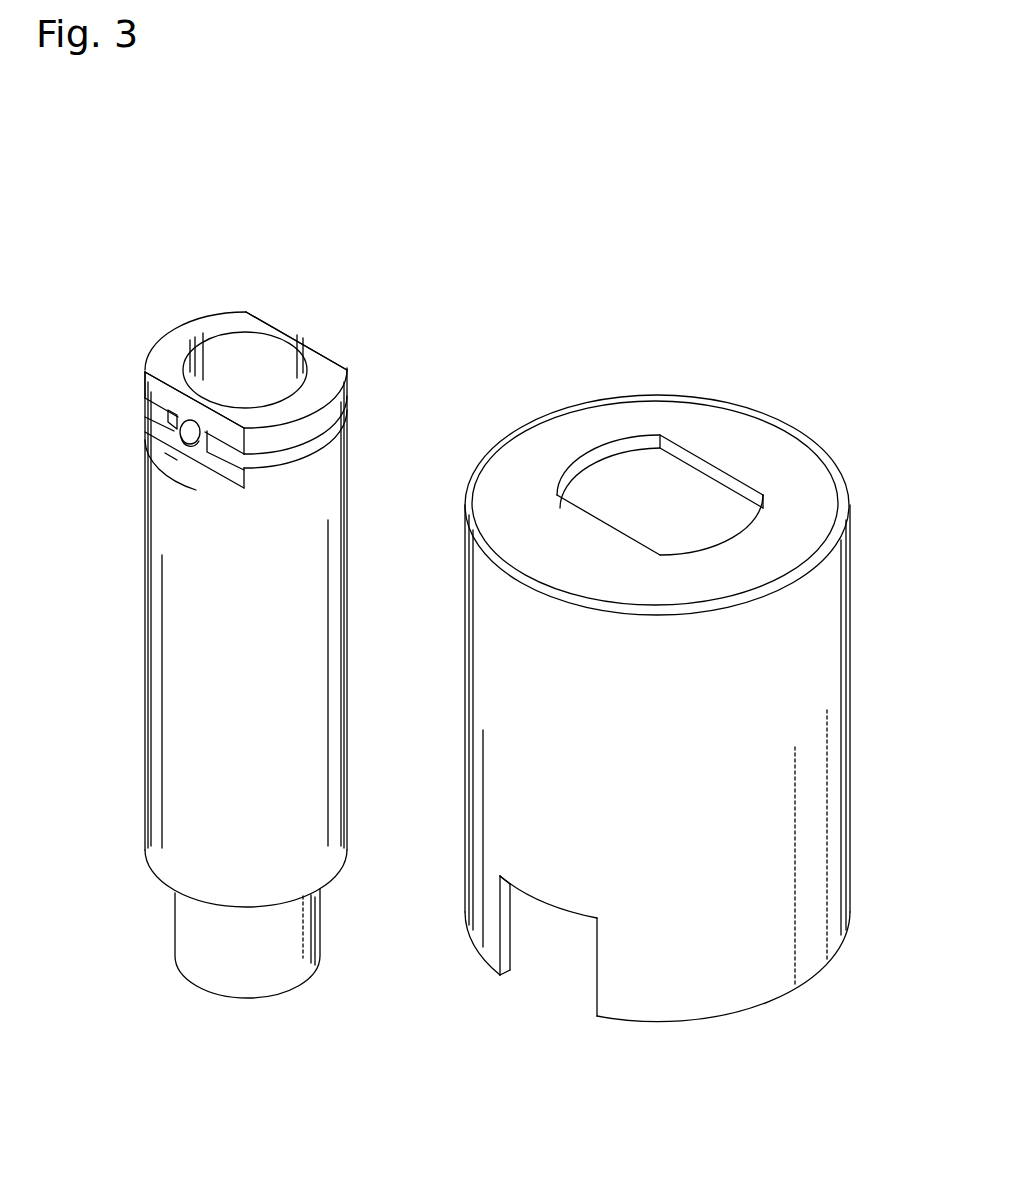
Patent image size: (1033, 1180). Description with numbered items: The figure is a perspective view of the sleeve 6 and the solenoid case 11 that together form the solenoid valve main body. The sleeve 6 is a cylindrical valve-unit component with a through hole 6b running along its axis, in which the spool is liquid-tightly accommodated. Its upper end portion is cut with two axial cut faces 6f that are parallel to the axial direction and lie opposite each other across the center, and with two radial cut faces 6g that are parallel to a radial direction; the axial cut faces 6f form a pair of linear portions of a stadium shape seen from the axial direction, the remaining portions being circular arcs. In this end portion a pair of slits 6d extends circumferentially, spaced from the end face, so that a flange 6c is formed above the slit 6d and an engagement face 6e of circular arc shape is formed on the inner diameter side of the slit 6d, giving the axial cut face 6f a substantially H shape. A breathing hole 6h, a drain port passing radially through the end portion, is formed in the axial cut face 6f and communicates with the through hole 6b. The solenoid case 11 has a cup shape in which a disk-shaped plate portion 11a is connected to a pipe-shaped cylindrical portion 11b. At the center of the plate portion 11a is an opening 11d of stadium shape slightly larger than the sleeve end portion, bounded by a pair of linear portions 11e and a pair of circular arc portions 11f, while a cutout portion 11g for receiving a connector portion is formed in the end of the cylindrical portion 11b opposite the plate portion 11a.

The sleeve 6 is at (337, 306).
The through hole 6b is at (227, 360).
The flange 6c is at (349, 393).
The slit 6d is at (345, 438).
The engagement face 6e is at (217, 447).
The axial cut face 6f is at (165, 395).
The radial cut face 6g is at (177, 458).
The breathing hole 6h is at (177, 430).
The solenoid case 11 is at (780, 370).
The plate portion 11a is at (587, 422).
The cylindrical portion 11b is at (827, 730).
The opening 11d is at (637, 474).
The linear portion 11e is at (713, 472).
The circular arc portion 11f is at (745, 535).
The cutout portion 11g is at (597, 982).